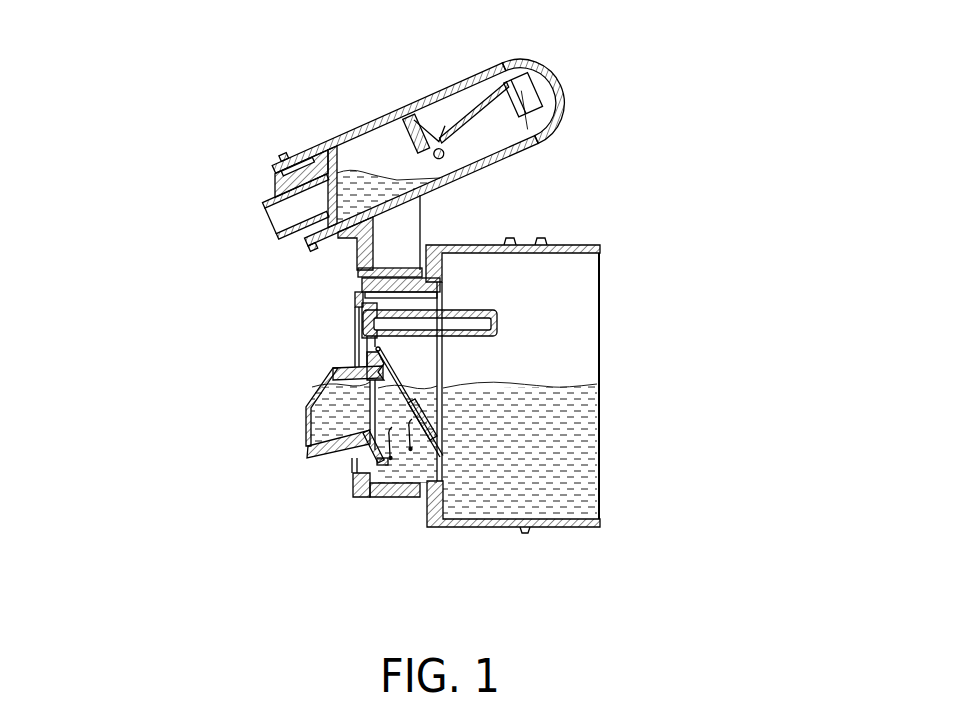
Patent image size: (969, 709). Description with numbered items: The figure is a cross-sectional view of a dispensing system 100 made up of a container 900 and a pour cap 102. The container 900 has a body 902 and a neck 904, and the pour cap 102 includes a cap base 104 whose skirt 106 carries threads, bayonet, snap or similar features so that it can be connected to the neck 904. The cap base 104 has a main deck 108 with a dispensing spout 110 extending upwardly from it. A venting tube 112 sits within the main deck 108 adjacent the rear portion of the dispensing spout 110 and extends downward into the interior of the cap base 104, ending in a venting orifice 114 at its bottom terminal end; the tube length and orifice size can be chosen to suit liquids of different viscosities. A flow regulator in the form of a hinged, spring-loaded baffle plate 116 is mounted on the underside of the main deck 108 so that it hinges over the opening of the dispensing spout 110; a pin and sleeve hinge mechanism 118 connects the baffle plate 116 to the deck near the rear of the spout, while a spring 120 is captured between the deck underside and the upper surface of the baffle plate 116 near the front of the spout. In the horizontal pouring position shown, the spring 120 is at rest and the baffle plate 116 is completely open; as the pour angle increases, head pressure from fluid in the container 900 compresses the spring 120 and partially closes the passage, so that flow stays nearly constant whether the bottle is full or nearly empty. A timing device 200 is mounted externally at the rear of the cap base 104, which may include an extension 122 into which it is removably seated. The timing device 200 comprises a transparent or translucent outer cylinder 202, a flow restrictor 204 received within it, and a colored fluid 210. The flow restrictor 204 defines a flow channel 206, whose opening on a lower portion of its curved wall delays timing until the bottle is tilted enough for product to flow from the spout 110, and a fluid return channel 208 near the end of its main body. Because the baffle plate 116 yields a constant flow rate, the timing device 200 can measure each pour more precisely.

The dispensing system 100 is at (200, 84).
The pour cap 102 is at (350, 473).
The cap base 104 is at (352, 500).
The skirt 106 is at (380, 498).
The main deck 108 is at (357, 365).
The dispensing spout 110 is at (323, 433).
The venting tube 112 is at (492, 298).
The venting orifice 114 is at (480, 324).
The baffle plate 116 is at (428, 424).
The pin and sleeve hinge mechanism 118 is at (360, 373).
The spring 120 is at (410, 447).
The neck 122 is at (413, 230).
The timing device 200 is at (418, 98).
The outer cylinder 202 is at (558, 105).
The flow restrictor 204 is at (478, 118).
The flow channel 206 is at (424, 124).
The fluid return channel 208 is at (519, 88).
The colored fluid 210 is at (362, 196).
The container 900 is at (606, 459).
The body 902 is at (602, 525).
The neck 904 is at (428, 268).